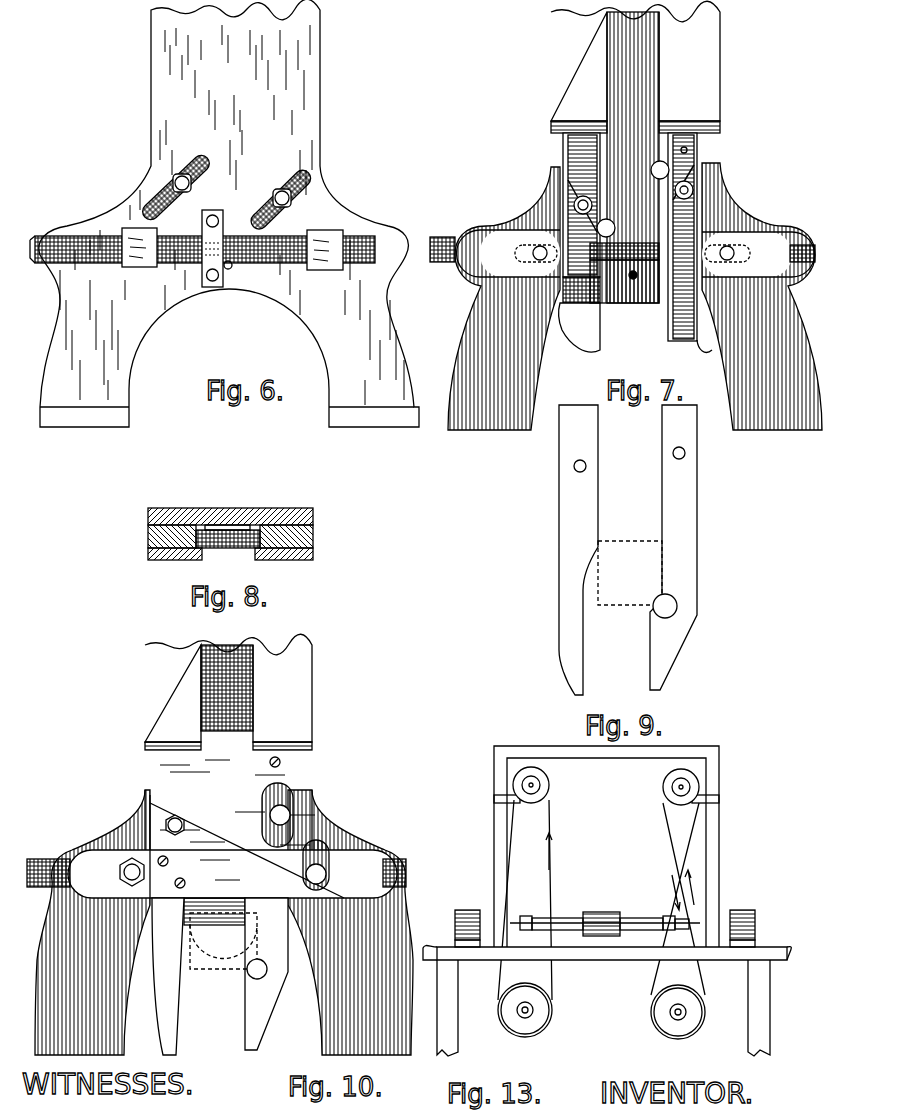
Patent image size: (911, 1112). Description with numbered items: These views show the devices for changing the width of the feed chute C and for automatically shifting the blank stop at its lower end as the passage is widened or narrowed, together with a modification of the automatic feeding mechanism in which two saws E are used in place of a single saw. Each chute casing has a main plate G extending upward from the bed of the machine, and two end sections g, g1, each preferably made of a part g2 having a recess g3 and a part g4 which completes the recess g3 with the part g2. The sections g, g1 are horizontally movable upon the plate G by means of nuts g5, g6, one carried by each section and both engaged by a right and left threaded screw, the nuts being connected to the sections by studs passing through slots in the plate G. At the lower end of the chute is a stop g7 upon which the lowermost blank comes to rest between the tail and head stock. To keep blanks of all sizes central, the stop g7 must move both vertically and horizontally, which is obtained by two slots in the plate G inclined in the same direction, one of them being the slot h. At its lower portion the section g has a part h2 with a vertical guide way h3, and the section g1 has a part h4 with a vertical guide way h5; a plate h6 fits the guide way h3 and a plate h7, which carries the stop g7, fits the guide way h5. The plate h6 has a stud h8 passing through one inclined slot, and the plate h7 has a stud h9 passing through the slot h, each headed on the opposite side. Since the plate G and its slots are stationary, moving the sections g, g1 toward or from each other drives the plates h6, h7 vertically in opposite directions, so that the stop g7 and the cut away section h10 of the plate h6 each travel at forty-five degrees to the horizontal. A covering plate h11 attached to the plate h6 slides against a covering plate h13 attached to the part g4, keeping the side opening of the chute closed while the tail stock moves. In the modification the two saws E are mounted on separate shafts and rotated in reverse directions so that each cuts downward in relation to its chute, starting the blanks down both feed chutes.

In FIG. 6, the main plate G is at (228, 100).
In FIG. 7, the main plate G is at (626, 296).
In FIG. 8, the main plate G is at (256, 454).
In FIG. 10, the main plate G is at (318, 940).
In FIG. 6, the end section g is at (217, 248).
In FIG. 8, the end section g is at (150, 538).
In FIG. 8, the end section g1 is at (313, 538).
In FIG. 8, the section part g2 is at (178, 520).
In FIG. 8, the recess g3 is at (313, 522).
In FIG. 7, the section part g4 is at (635, 152).
In FIG. 8, the section part g4 is at (168, 560).
In FIG. 10, the section part g4 is at (228, 692).
In FIG. 6, the nut g5 is at (133, 268).
In FIG. 7, the nut g5 is at (736, 256).
In FIG. 10, the nut g5 is at (328, 874).
In FIG. 6, the nut g6 is at (324, 271).
In FIG. 7, the nut g6 is at (534, 256).
In FIG. 10, the nut g6 is at (120, 872).
In FIG. 6, the stop g7 is at (262, 272).
In FIG. 7, the stop g7 is at (624, 273).
In FIG. 9, the stop g7 is at (677, 607).
In FIG. 10, the stop g7 is at (248, 975).
In FIG. 6, the inclined slot h is at (184, 173).
In FIG. 7, the inclined slot h is at (700, 205).
In FIG. 10, the inclined slot h is at (176, 815).
In FIG. 6, the lower part of section g h2 is at (282, 188).
In FIG. 7, the lower part of section g h2 is at (556, 148).
In FIG. 10, the lower part of section g h2 is at (262, 835).
In FIG. 7, the vertical guide way h3 is at (572, 165).
In FIG. 7, the lower part of section g1 h4 is at (700, 158).
In FIG. 7, the vertical guide way h5 is at (705, 172).
In FIG. 10, the vertical guide way h5 is at (247, 829).
In FIG. 9, the plate h6 is at (578, 550).
In FIG. 10, the plate h6 is at (168, 976).
In FIG. 9, the plate h7 is at (673, 547).
In FIG. 10, the plate h7 is at (266, 974).
In FIG. 7, the stud h8 is at (574, 211).
In FIG. 9, the stud h8 is at (586, 466).
In FIG. 7, the stud h9 is at (700, 189).
In FIG. 9, the stud h9 is at (685, 453).
In FIG. 9, the cut away section h10 is at (592, 560).
In FIG. 10, the cut away section h10 is at (223, 941).
In FIG. 10, the covering plate h11 is at (260, 860).
In FIG. 10, the covering plate h13 is at (254, 773).
In FIG. 13, the feed chute C is at (606, 847).
In FIG. 13, the saw E is at (550, 788).